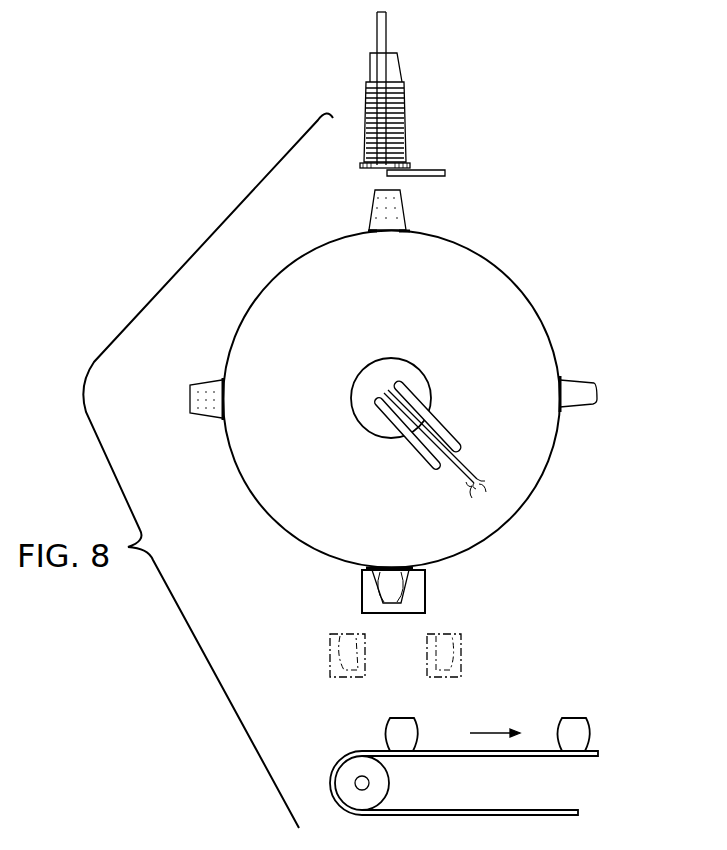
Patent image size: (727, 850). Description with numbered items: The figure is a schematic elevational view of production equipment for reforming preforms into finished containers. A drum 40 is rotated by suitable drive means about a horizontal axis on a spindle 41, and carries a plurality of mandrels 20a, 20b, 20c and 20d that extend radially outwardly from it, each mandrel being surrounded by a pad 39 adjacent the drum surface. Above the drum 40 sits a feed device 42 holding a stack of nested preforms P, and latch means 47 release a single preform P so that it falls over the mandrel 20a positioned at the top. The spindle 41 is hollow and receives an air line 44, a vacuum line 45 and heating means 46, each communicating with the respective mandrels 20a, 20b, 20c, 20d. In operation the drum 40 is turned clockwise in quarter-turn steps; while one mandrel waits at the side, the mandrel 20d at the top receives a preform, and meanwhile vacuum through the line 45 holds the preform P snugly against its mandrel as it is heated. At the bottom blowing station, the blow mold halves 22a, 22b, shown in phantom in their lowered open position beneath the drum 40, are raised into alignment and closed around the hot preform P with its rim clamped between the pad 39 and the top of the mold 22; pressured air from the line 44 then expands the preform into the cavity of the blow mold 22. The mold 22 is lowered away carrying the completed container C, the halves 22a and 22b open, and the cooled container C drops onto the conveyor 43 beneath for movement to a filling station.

The feed device 42 is at (381, 70).
The preform P is at (398, 124).
The latch means 47 is at (429, 166).
The pad 39 is at (365, 232).
The mandrel 20a is at (393, 210).
The mandrel 20b is at (583, 381).
The mandrel 20c is at (410, 582).
The mandrel 20d is at (190, 396).
The drum 40 is at (416, 306).
The spindle 41 is at (372, 383).
The air line 44 is at (450, 435).
The vacuum line 45 is at (434, 462).
The heating means 46 is at (470, 478).
The blow mold 22 is at (362, 597).
The blow mold half 22a is at (331, 652).
The blow mold half 22b is at (463, 652).
The conveyor 43 is at (335, 787).
The container C is at (584, 728).